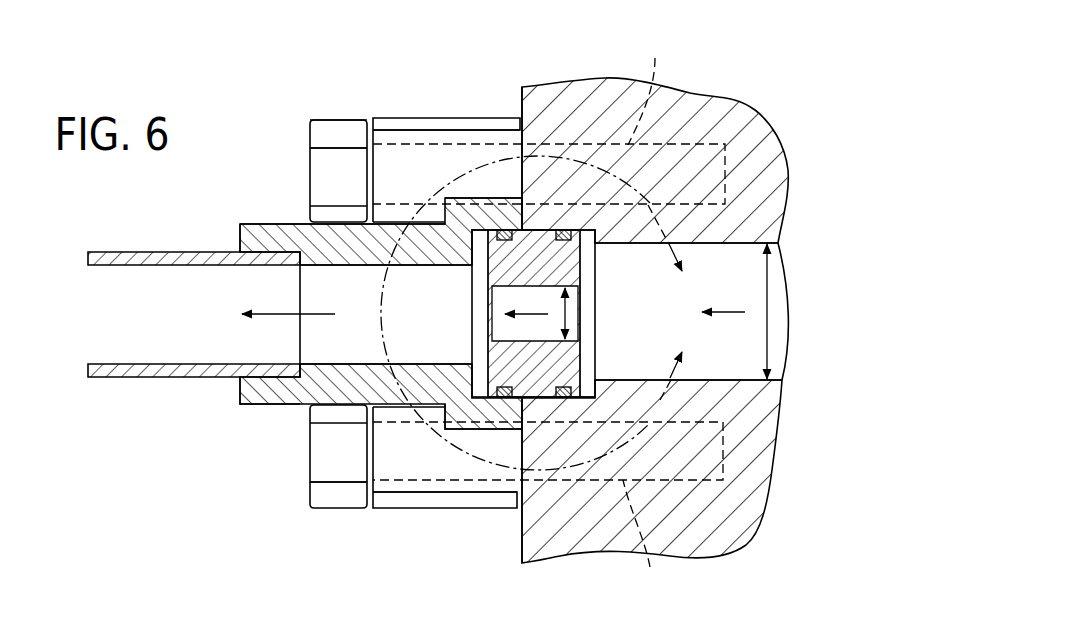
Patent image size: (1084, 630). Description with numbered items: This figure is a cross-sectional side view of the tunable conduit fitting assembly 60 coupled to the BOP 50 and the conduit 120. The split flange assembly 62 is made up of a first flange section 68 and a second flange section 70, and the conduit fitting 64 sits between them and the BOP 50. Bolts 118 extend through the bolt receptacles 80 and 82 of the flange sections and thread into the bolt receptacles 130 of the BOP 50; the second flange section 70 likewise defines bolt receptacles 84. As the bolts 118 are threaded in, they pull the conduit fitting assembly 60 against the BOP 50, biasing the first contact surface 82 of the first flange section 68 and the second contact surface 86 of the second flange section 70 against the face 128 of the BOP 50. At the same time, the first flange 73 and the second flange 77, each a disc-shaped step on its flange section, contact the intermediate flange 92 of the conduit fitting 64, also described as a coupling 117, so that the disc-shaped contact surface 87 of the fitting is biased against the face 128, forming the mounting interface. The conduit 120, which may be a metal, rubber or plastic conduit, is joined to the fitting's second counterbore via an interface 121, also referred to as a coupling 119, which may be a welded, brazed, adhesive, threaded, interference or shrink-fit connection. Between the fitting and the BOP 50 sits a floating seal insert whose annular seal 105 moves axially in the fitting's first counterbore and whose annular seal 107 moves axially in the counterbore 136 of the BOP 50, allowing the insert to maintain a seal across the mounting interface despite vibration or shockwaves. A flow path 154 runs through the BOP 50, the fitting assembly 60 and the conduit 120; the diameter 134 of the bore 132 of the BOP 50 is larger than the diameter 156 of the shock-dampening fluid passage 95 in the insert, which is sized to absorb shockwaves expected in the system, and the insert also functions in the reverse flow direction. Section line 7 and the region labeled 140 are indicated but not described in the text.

The BOP 50 is at (705, 95).
The tunable conduit fitting assembly 60 is at (318, 106).
The split flange assembly 62 is at (366, 117).
The conduit fitting 64 is at (250, 412).
The first flange section 68 is at (415, 118).
The second flange section 70 is at (393, 512).
The first flange 73 is at (448, 208).
The second flange 77 is at (445, 400).
The bolt receptacles 80 is at (397, 150).
The first contact surface 82 is at (518, 132).
The bolt receptacles 84 is at (377, 510).
The second contact surface 86 is at (507, 492).
The disc-shaped contact surface 87 is at (520, 196).
The intermediate flange 92 is at (447, 205).
The shock-dampening fluid passage 95 is at (565, 282).
The annular seal 105 is at (562, 400).
The annular seal 107 is at (558, 229).
The coupling 117 is at (415, 468).
The bolts 118 is at (310, 172).
The coupling 119 is at (232, 392).
The conduit 120 is at (158, 292).
The interface 121 is at (265, 247).
The face 128 is at (518, 100).
The bolt receptacles 130 is at (648, 311).
The bore 132 is at (725, 268).
The diameter 134 is at (766, 314).
The counterbore 136 is at (580, 400).
The seal groove 140 is at (588, 513).
The flow path 154 is at (285, 302).
The diameter 156 is at (572, 314).
The section line 7 is at (685, 312).